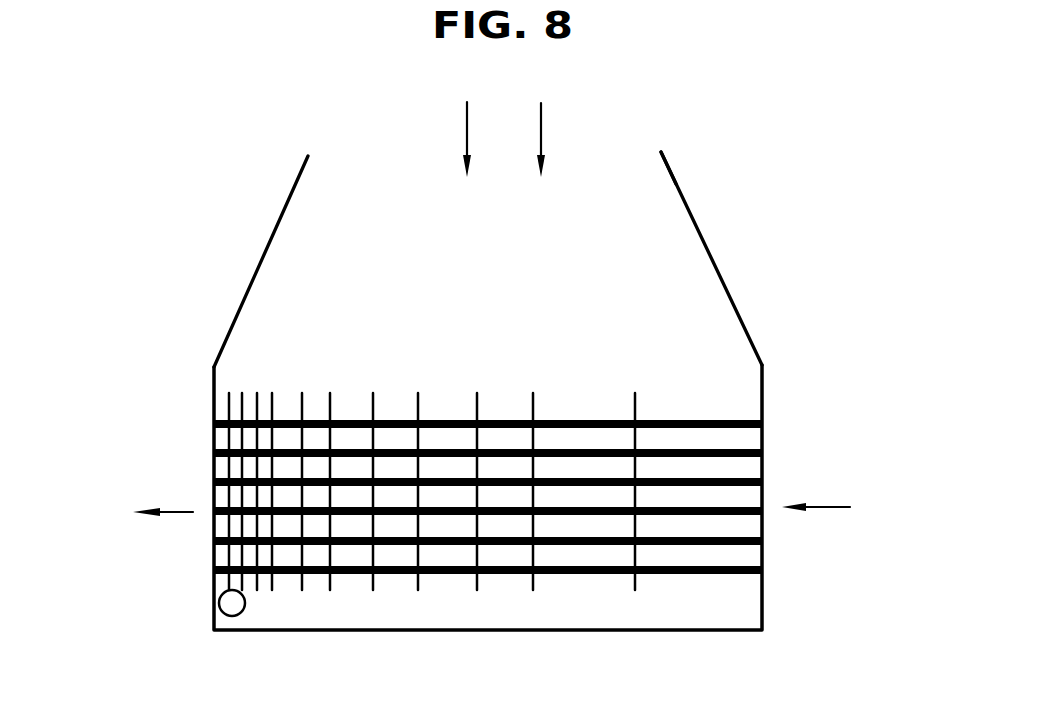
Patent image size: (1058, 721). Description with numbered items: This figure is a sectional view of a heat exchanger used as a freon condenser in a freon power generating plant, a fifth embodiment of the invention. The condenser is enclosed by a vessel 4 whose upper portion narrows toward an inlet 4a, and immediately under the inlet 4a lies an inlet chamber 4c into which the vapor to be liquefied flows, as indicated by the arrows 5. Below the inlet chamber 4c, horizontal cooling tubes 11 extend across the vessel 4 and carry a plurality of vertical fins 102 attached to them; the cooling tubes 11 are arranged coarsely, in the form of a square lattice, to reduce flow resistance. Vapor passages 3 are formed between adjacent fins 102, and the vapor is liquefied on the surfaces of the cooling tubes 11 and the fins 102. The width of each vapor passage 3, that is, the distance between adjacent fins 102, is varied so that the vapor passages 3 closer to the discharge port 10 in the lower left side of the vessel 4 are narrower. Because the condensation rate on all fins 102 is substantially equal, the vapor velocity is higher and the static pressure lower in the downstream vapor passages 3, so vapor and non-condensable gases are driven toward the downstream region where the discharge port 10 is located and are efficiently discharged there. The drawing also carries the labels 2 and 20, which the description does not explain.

The housing 2 is at (591, 590).
The vessel 4 is at (713, 258).
The inlet 4a is at (623, 177).
The inlet chamber 4c is at (525, 257).
The arrows 5 is at (541, 113).
The fins 102 is at (302, 395).
The vapor passages 3 is at (351, 396).
The cooling tubes 11 is at (728, 420).
The flow direction arrow 20 is at (816, 502).
The discharge port 10 is at (238, 616).